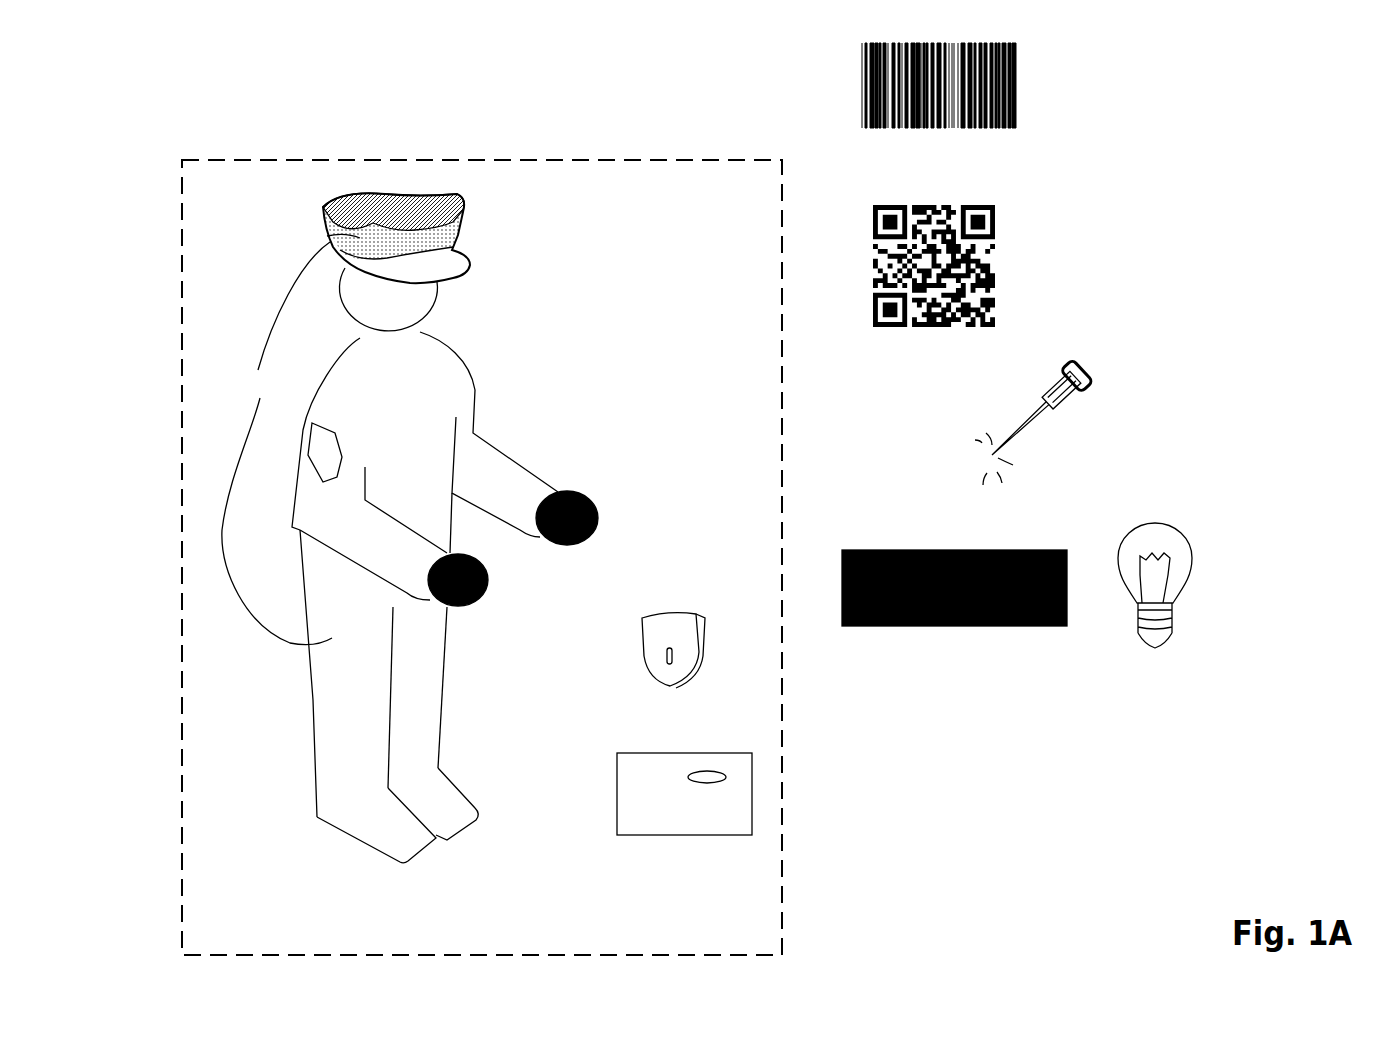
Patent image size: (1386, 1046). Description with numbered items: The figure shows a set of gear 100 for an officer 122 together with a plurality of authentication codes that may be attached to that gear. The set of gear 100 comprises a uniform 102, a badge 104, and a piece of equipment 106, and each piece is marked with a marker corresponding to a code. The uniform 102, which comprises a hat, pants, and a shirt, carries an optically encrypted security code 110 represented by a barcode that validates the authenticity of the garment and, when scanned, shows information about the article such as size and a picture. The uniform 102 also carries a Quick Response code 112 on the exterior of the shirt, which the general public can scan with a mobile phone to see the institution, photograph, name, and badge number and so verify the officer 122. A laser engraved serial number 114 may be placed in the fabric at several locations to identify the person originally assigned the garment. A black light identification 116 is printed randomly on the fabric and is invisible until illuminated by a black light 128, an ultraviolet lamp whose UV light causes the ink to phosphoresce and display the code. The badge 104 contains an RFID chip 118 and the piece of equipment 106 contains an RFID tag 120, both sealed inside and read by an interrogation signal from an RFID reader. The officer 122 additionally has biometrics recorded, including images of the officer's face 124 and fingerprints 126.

The set of gear 100 is at (675, 937).
The uniform 102 is at (393, 417).
The badge 104 is at (658, 640).
The piece of equipment 106 is at (662, 820).
The optically encrypted security code 110 is at (992, 102).
The Quick Response (QR) code 112 is at (980, 268).
The laser engraved serial number 114 is at (1027, 437).
The black light (BL) identification 116 is at (1067, 603).
The RFID chip 118 is at (675, 650).
The RFID tag 120 is at (715, 775).
The officer 122 is at (397, 837).
The officer's face 124 is at (407, 295).
The fingerprints 126 is at (600, 523).
The black light 128 is at (1180, 557).